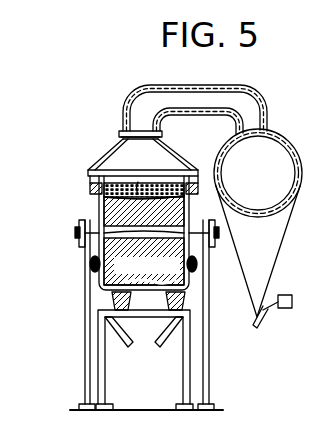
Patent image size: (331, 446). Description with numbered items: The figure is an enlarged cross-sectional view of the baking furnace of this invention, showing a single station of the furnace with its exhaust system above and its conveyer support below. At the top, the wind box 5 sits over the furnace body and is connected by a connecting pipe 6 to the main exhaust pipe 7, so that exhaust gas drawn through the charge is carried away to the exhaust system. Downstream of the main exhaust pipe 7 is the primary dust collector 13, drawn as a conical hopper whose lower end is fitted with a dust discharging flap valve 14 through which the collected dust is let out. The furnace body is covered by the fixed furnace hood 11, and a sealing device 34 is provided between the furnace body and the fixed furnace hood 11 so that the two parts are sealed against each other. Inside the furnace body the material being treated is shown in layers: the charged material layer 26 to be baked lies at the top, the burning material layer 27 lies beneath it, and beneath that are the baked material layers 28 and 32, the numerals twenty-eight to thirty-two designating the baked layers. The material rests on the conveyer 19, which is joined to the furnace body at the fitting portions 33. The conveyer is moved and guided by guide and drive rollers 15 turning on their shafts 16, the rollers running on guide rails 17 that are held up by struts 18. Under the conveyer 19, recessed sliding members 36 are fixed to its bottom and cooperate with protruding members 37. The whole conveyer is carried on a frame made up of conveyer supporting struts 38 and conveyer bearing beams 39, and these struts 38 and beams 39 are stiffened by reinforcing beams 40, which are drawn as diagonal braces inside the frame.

The wind box 5 is at (143, 153).
The connecting pipe 6 is at (241, 95).
The main exhaust pipe 7 is at (264, 187).
The fixed furnace hood 11 is at (195, 178).
The primary dust collector 13 is at (265, 264).
The dust discharging flap valve 14 is at (266, 316).
The guide and drive roller 15 is at (78, 230).
The roller shaft 16 is at (210, 242).
The guide rail 17 is at (84, 252).
The strut 18 is at (85, 335).
The conveyer 19 is at (143, 290).
The charged material layer 26 is at (144, 187).
The burning material layer 27 is at (138, 197).
The baked material layer 28 is at (104, 265).
The baked material layer 32 is at (184, 268).
The fitting portion 33 is at (197, 270).
The sealing device 34 is at (91, 184).
The recessed sliding member 36 is at (112, 297).
The protruding member 37 is at (184, 304).
The conveyer supporting strut 38 is at (183, 386).
The conveyer bearing beam 39 is at (148, 320).
The reinforcing beam 40 is at (115, 338).